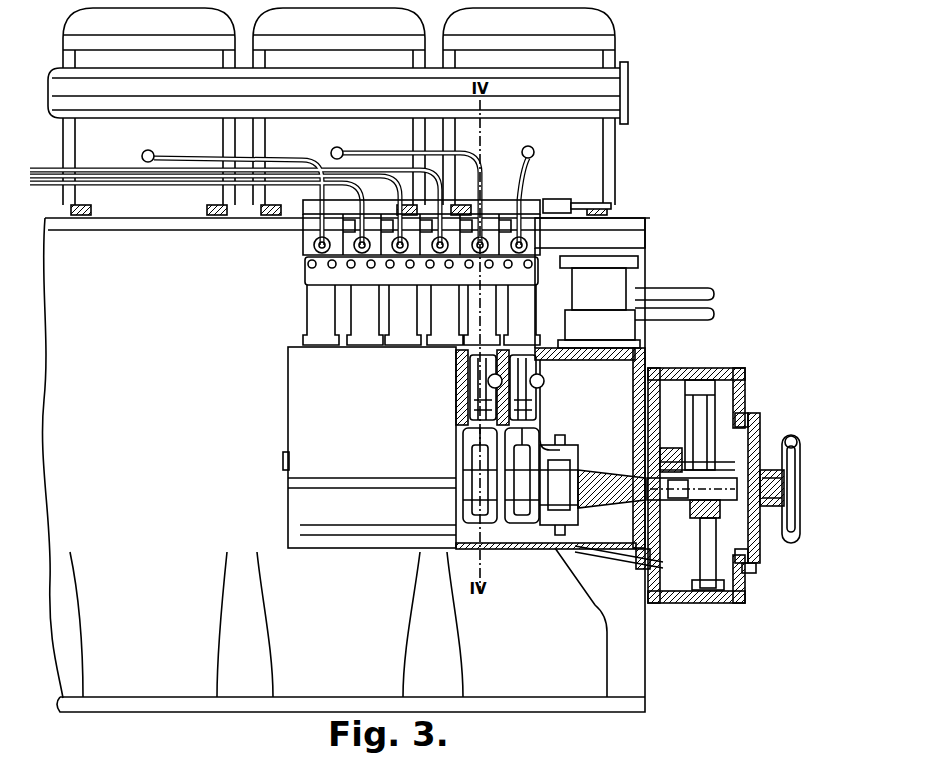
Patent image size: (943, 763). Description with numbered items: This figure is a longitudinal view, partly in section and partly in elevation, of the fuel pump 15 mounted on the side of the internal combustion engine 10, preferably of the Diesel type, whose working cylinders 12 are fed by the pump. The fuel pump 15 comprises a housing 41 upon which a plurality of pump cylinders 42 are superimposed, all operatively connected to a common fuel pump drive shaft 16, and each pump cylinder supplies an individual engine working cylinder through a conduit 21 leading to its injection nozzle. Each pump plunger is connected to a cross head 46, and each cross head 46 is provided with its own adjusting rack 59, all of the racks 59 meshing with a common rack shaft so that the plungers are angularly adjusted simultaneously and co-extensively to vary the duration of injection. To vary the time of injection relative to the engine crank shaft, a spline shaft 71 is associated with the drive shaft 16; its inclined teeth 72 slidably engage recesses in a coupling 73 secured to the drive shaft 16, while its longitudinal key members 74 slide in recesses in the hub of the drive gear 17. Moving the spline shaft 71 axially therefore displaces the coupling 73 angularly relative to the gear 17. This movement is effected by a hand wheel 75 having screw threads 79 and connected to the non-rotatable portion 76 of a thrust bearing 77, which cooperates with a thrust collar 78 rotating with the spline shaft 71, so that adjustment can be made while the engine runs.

The internal combustion engine 10 is at (648, 692).
The working cylinders 12 is at (612, 62).
The fuel pump 15 is at (286, 458).
The fuel pump drive shaft 16 is at (535, 510).
The drive gear 17 is at (700, 382).
The conduit 21 is at (440, 152).
The housing 41 is at (288, 380).
The pump cylinders 42 is at (305, 312).
The cross head 46 is at (462, 383).
The rack 59 is at (545, 378).
The spline shaft 71 is at (625, 525).
The teeth 72 is at (570, 520).
The coupling 73 is at (590, 470).
The key members 74 is at (678, 500).
The hand wheel 75 is at (800, 530).
The non-rotatable portion 76 is at (785, 460).
The thrust bearing 77 is at (745, 447).
The thrust collar 78 is at (749, 573).
The screw threads 79 is at (800, 480).